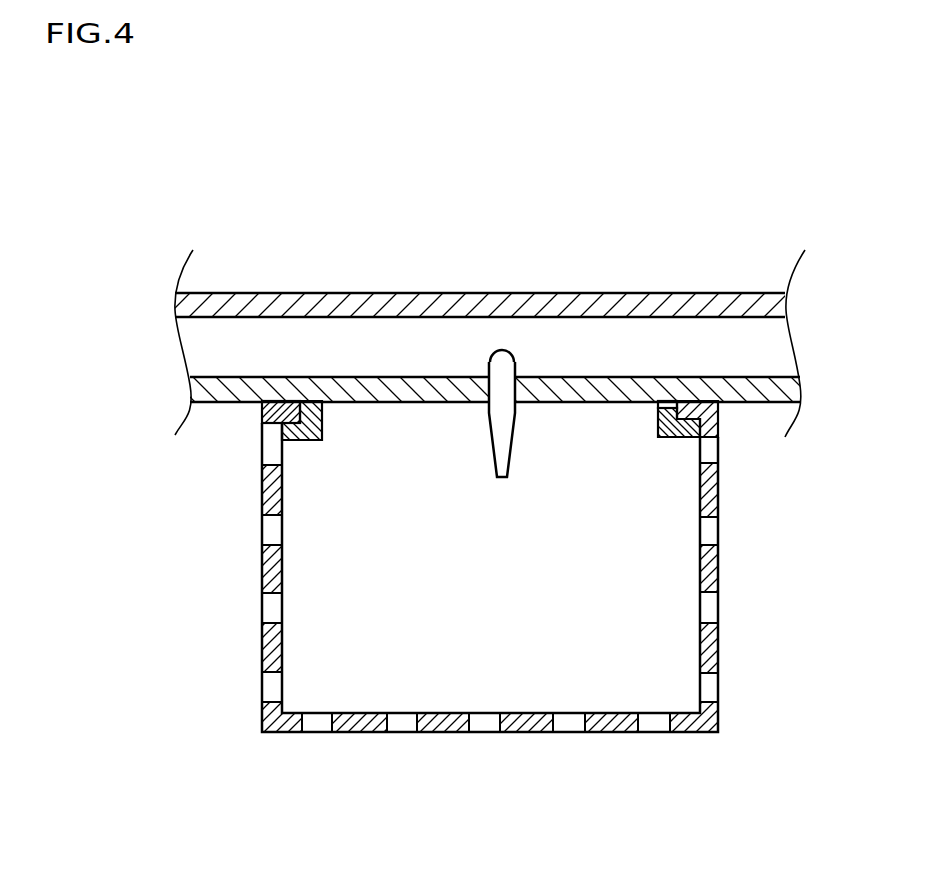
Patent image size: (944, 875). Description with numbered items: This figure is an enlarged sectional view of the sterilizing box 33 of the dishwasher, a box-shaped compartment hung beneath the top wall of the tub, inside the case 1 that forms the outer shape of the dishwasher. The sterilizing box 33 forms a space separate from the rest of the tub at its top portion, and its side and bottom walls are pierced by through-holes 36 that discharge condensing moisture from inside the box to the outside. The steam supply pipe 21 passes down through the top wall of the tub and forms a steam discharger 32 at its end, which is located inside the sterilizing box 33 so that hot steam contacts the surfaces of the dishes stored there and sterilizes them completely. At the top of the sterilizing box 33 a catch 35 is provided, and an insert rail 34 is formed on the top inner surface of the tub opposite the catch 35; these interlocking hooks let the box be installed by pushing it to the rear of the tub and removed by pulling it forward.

The case 1 is at (452, 292).
The steam supply pipe 21 is at (510, 353).
The steam discharger 32 is at (500, 480).
The sterilizing box 33 is at (718, 568).
The insert rail 34 is at (660, 438).
The catch 35 is at (293, 401).
The through-holes 36 is at (712, 612).